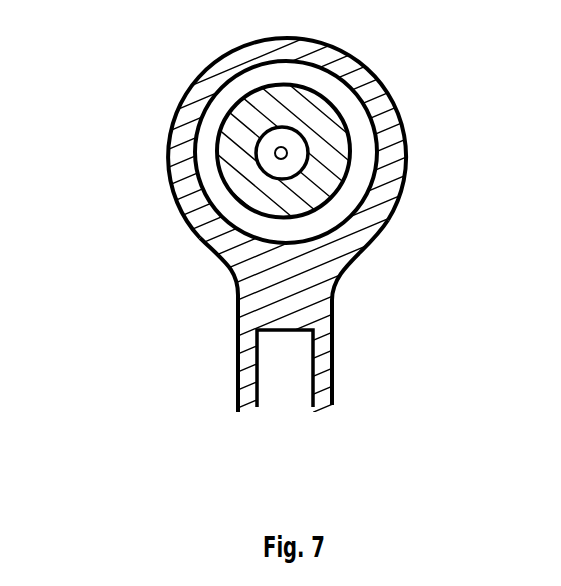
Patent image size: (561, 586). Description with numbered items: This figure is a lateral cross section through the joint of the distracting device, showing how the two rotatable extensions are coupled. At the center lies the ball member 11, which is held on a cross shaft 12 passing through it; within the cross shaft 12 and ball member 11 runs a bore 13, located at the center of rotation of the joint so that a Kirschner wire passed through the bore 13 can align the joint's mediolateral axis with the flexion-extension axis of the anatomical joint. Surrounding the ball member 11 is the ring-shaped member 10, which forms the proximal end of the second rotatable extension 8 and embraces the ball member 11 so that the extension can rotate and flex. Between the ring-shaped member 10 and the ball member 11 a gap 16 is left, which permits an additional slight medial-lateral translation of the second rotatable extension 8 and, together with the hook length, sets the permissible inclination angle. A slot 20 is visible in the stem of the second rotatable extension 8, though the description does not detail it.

The second rotatable extension 8 is at (305, 303).
The ring-shaped member 10 is at (388, 120).
The ball member 11 is at (323, 120).
The cross shaft 12 is at (280, 166).
The bore 13 is at (275, 152).
The gap 16 is at (360, 184).
The slot / recess 20 is at (308, 335).